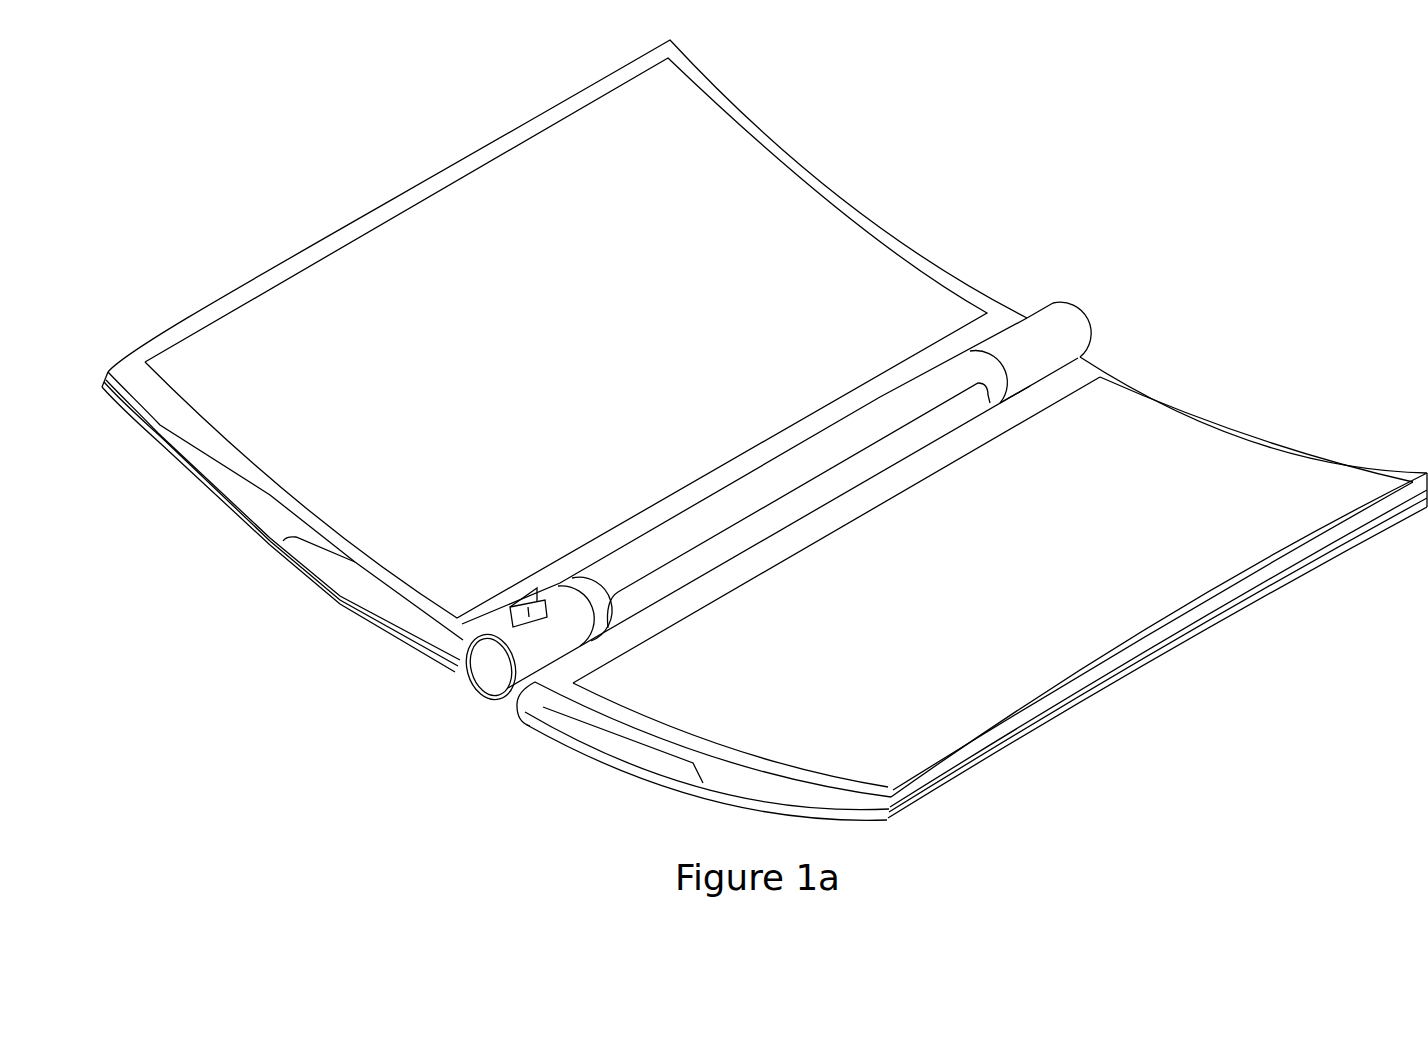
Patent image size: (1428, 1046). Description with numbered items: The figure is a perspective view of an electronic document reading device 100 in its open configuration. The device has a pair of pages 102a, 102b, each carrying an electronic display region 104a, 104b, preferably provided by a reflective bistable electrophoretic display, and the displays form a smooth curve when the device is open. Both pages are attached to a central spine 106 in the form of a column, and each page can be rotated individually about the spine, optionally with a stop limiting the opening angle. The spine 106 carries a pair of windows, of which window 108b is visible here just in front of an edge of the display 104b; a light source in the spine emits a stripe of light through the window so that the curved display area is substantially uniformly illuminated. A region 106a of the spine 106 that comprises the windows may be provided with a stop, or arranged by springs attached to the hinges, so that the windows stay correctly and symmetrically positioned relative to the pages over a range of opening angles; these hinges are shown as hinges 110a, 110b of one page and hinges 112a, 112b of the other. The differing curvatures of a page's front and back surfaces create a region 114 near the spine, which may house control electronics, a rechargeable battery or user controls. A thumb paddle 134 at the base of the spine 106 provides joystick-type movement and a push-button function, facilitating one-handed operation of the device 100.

The electronic document reading device 100 is at (764, 437).
The page 102a is at (564, 356).
The page 102b is at (972, 588).
The electronic display region 104a is at (549, 363).
The electronic display region 104b is at (1000, 601).
The central spine 106 is at (786, 498).
The region of the spine 106a is at (921, 400).
The window 108b is at (953, 410).
The hinge 110a is at (587, 603).
The hinge 110b is at (1025, 352).
The hinge 112a is at (525, 655).
The hinge 112b is at (1073, 323).
The region between front and back surfaces 114 is at (357, 595).
The thumb paddle 134 is at (512, 615).